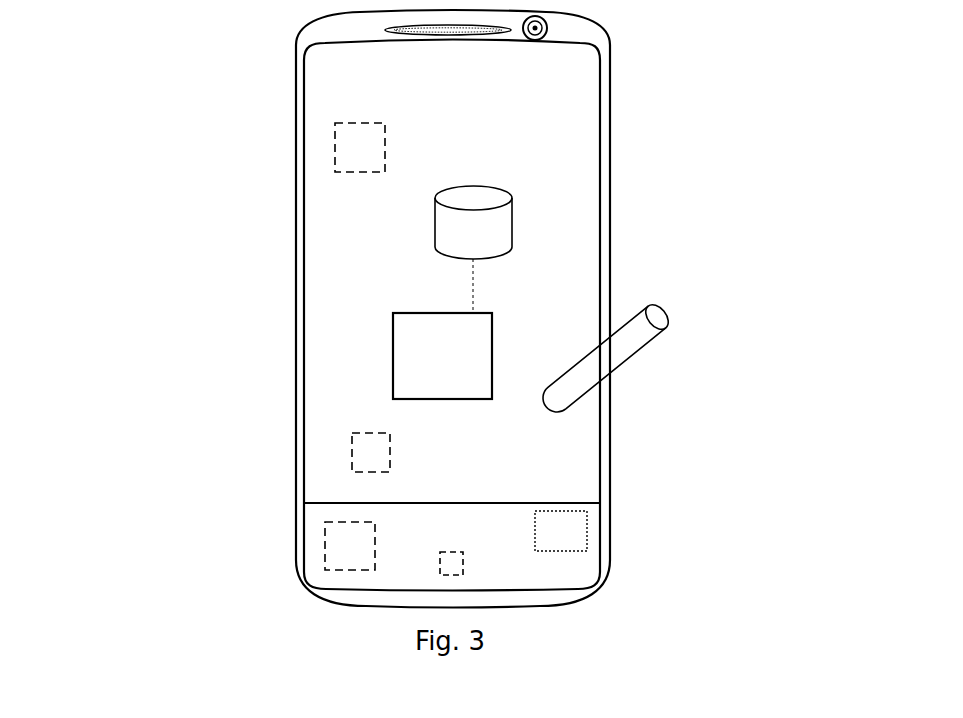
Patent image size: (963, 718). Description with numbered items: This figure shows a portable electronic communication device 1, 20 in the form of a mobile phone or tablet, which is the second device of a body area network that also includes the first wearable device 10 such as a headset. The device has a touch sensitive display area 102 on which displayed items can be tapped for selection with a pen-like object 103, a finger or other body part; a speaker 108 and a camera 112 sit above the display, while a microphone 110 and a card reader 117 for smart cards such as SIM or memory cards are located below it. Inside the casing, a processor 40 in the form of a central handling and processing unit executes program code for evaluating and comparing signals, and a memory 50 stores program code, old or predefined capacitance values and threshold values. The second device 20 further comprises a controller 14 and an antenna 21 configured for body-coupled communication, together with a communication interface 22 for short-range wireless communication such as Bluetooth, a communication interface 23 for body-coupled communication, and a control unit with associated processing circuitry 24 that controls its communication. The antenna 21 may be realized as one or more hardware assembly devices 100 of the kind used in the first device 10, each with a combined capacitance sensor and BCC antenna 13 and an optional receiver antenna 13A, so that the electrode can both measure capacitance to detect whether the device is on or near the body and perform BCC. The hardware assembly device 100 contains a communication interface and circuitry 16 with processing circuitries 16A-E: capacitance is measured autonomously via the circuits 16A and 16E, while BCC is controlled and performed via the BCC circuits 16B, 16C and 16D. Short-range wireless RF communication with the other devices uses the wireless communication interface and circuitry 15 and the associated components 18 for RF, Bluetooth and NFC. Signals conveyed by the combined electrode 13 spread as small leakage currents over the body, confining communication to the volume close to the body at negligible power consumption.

The portable electronic communication device 1 is at (564, 309).
The first portable electronic communication device 10 is at (564, 309).
The second portable electronic communication device 20 is at (564, 309).
The communication interface for short-range wireless communication 22 is at (564, 309).
The communication interface for BCC 23 is at (564, 309).
The control unit with associated processing circuitry 24 is at (635, 225).
The combined capacitance sensor and BCC antenna 13 is at (201, 526).
The receiver BCC antenna 13A is at (201, 526).
The communication interface and circuitry 16 is at (201, 526).
The processing circuitries 16A-E is at (201, 526).
The capacitive measurement circuit 16A is at (201, 526).
The BCC circuit 16B is at (201, 526).
The BCC circuit 16C is at (201, 526).
The BCC circuit 16D is at (201, 526).
The capacitance measuring circuit 16E is at (201, 526).
The antenna 21 is at (201, 526).
The hardware assembly device 100 is at (345, 550).
The controller 14 is at (372, 455).
The wireless communication interface and circuitry 15 is at (264, 146).
The RF communication components 18 is at (352, 150).
The central handling and processing unit 40 is at (442, 356).
The memory 50 is at (473, 249).
The display area 102 is at (522, 123).
The pen-like object 103 is at (623, 340).
The speaker 108 is at (370, 33).
The microphone 110 is at (478, 567).
The camera 112 is at (562, 31).
The card reader 117 is at (570, 519).